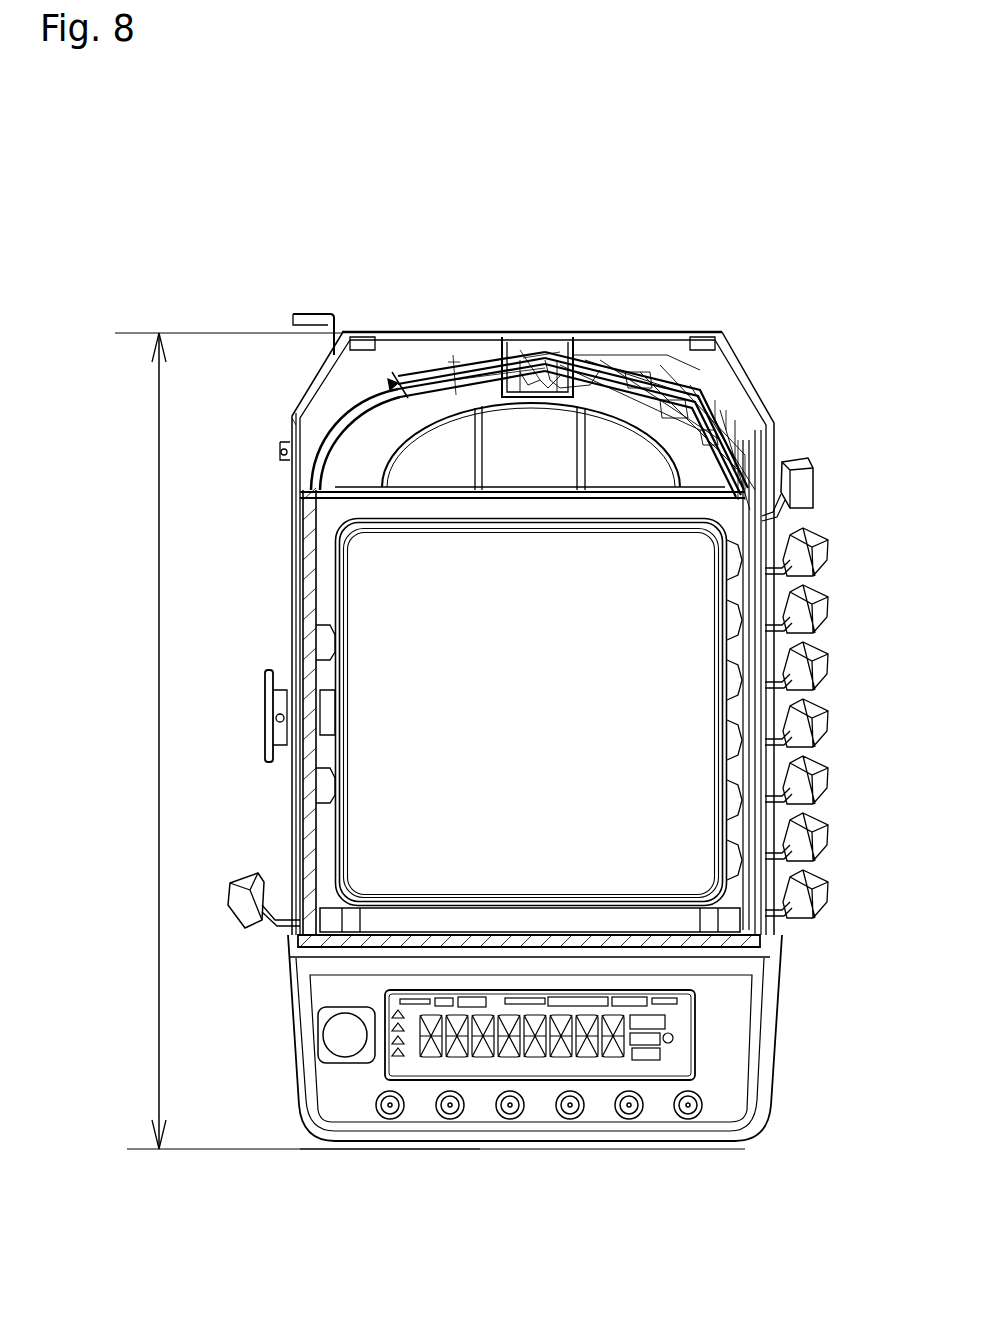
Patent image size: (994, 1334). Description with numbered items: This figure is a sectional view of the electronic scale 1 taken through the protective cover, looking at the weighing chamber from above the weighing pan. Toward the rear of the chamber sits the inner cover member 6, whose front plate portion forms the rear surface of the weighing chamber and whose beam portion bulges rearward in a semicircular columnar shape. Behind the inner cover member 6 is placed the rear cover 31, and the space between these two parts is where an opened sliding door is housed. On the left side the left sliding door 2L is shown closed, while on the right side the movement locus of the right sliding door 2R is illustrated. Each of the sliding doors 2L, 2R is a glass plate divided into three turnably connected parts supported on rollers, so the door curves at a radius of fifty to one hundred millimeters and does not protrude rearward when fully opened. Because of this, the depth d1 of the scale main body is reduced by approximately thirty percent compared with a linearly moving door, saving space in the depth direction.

The electronic scale 1 is at (503, 283).
The inner cover member 6 is at (450, 413).
The rear cover 31 is at (634, 332).
The left sliding door 2L is at (305, 540).
The right sliding door 2R is at (795, 488).
The depth of the scale main body d1 is at (297, 741).